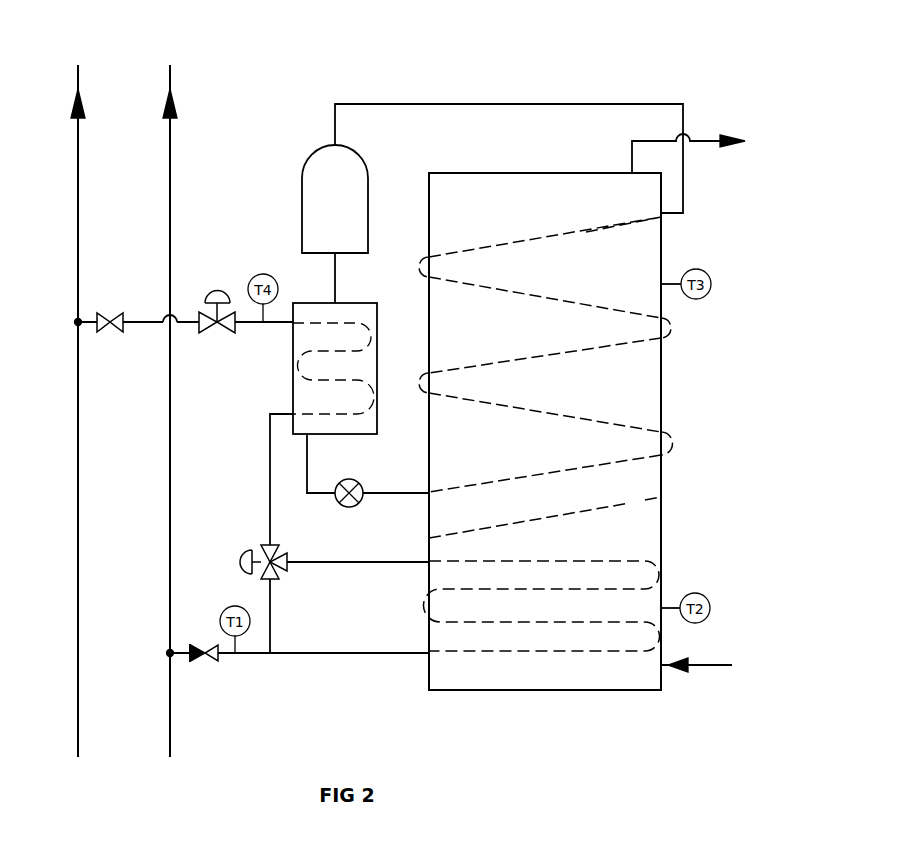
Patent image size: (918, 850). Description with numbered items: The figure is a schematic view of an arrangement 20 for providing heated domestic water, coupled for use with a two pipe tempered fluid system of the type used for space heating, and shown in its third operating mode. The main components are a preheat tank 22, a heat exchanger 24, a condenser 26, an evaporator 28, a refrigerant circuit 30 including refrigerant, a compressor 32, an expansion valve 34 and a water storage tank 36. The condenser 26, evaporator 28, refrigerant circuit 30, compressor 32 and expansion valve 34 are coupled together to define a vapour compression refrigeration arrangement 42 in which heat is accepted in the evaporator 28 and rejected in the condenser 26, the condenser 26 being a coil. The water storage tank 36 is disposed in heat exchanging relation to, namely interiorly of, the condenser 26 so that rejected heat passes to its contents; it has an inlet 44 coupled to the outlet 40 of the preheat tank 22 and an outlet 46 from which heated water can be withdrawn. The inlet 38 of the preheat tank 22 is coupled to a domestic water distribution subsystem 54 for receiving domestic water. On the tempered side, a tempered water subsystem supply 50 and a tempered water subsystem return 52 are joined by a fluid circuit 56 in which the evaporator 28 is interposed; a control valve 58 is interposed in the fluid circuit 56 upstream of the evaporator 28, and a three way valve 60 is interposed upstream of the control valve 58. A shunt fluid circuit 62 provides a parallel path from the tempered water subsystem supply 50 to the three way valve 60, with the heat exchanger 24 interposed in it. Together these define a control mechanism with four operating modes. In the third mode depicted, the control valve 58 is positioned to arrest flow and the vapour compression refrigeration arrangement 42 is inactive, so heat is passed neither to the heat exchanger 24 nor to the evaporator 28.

The arrangement 20 is at (583, 70).
The preheat tank 22 is at (462, 693).
The heat exchanger 24 is at (502, 623).
The condenser 26 is at (515, 289).
The evaporator 28 is at (292, 363).
The refrigerant circuit 30 is at (310, 473).
The compressor 32 is at (304, 181).
The expansion valve 34 is at (360, 484).
The water storage tank 36 is at (663, 388).
The inlet 38 is at (690, 668).
The outlet 40 is at (640, 510).
The vapour compression refrigeration arrangement 42 is at (332, 504).
The inlet 44 is at (645, 488).
The outlet 46 is at (706, 138).
The tempered water subsystem supply 50 is at (171, 229).
The tempered water subsystem return 52 is at (76, 372).
The domestic water distribution subsystem 54 is at (770, 664).
The fluid circuit 56 is at (270, 504).
The control valve 58 is at (222, 338).
The three way valve 60 is at (281, 569).
The shunt fluid circuit 62 is at (333, 653).